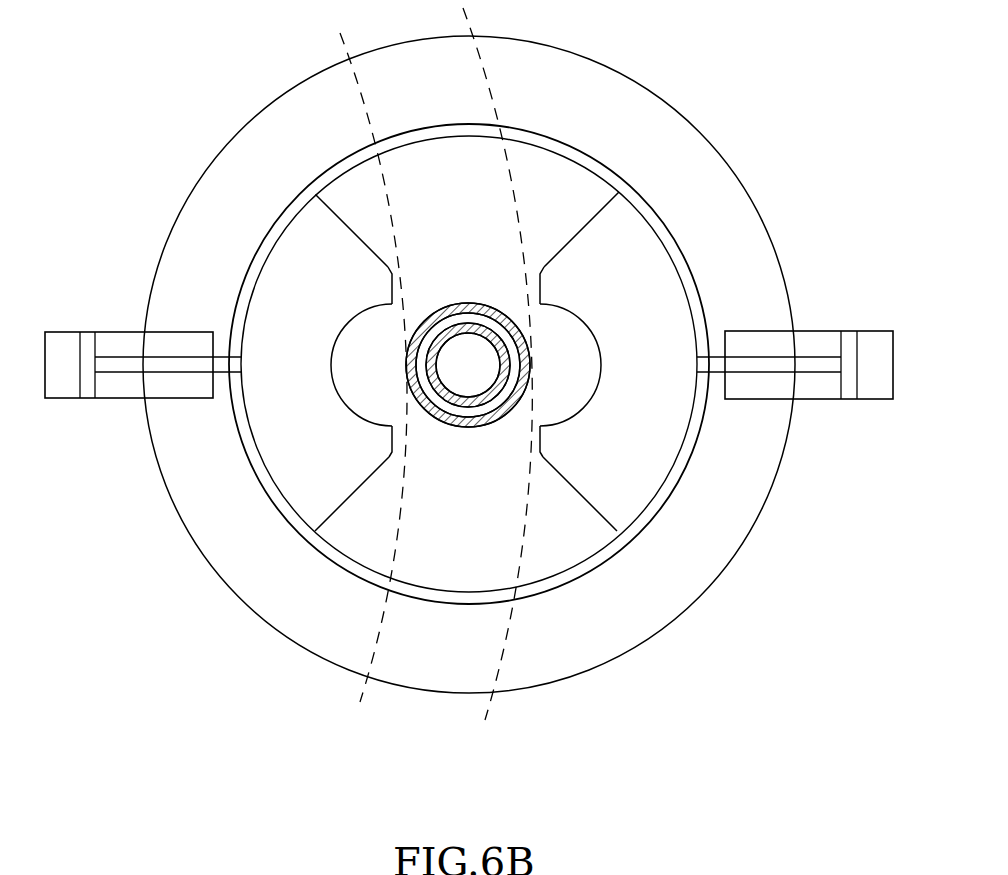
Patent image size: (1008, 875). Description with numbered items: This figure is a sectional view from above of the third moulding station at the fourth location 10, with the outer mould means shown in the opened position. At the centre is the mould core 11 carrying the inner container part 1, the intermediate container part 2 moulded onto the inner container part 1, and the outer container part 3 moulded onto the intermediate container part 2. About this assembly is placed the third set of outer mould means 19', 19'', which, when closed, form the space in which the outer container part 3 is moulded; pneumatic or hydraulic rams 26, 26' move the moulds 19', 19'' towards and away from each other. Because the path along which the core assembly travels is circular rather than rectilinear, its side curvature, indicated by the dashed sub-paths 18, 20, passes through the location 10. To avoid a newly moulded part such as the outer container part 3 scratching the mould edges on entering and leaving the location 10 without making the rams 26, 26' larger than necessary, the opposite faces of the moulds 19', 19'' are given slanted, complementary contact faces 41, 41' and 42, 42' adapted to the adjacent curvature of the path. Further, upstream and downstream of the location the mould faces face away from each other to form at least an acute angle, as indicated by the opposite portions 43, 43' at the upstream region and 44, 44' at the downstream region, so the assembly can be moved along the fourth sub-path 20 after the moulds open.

The fourth location 10 is at (715, 122).
The sub-path 18 is at (497, 703).
The fourth sub-path 20 is at (343, 42).
The outer mould means 19' is at (302, 367).
The outer mould means 19'' is at (639, 374).
The slanted contact face 41 is at (337, 291).
The slanted contact face 41' is at (595, 289).
The slanted contact face 42 is at (342, 455).
The slanted contact face 42' is at (600, 444).
The opposite portion 43 is at (352, 190).
The opposite portion 43' is at (581, 186).
The opposite portion 44 is at (352, 539).
The opposite portion 44' is at (580, 550).
The ram 26 is at (143, 322).
The ram 26' is at (795, 327).
The mould core 11 is at (462, 340).
The inner container part 1 is at (508, 372).
The intermediate container part 2 is at (432, 404).
The outer container part 3 is at (474, 427).